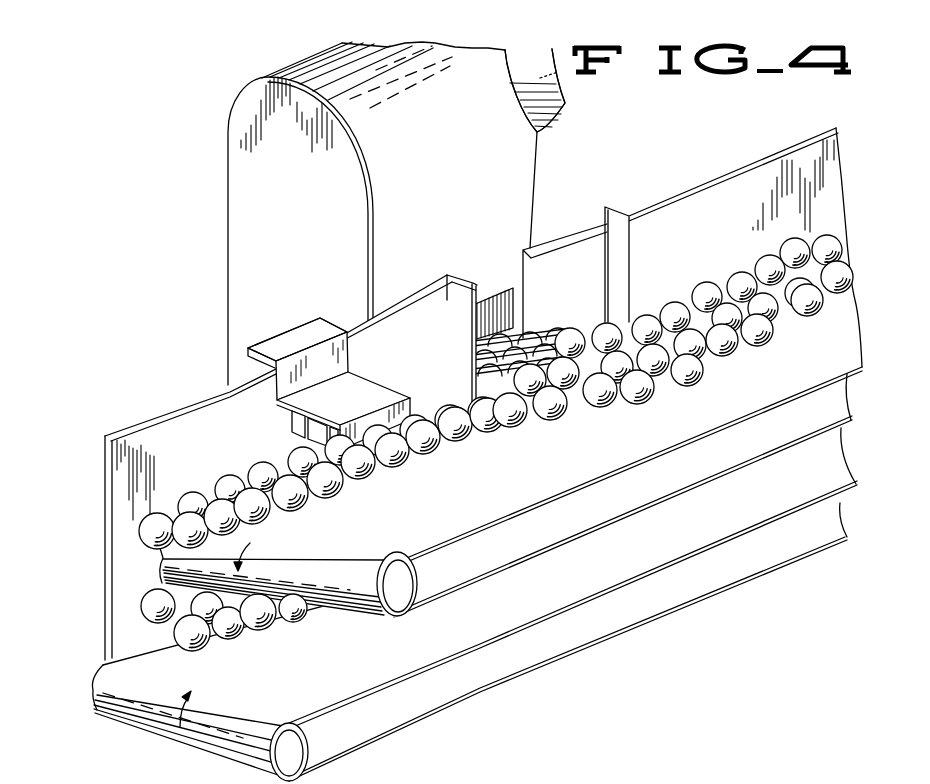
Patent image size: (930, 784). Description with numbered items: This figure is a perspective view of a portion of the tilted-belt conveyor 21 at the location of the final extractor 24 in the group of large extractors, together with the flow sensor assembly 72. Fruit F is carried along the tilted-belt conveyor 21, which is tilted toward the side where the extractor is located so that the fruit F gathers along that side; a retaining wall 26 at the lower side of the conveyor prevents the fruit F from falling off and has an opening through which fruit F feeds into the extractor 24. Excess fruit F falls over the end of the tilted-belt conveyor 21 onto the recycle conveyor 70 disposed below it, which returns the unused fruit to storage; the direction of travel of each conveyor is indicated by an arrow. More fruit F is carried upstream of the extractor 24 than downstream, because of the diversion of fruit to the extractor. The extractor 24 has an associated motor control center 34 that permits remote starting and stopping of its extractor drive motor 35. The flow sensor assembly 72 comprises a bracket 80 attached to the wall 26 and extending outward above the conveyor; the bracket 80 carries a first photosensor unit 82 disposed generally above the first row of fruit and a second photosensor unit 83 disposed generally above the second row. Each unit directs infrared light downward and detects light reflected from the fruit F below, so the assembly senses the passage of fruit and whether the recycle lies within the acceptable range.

The extractor 24 is at (463, 163).
The motor control center 34 is at (563, 102).
The extractor drive motor 35 is at (563, 102).
The retaining wall 26 is at (118, 529).
The flow sensor assembly 72 is at (333, 369).
The bracket 80 is at (297, 333).
The first photosensor unit 82 is at (292, 416).
The second photosensor unit 83 is at (327, 438).
The tilted-belt discharge conveyor 21 is at (510, 476).
The recycle conveyor 70 is at (380, 662).
The fruit F is at (620, 330).